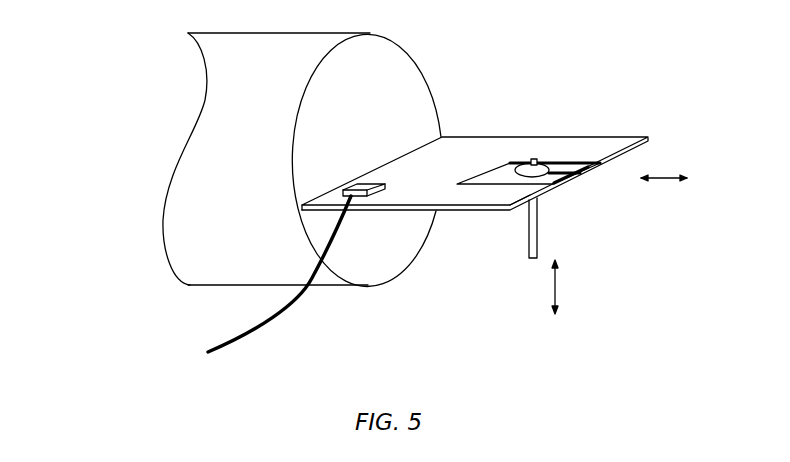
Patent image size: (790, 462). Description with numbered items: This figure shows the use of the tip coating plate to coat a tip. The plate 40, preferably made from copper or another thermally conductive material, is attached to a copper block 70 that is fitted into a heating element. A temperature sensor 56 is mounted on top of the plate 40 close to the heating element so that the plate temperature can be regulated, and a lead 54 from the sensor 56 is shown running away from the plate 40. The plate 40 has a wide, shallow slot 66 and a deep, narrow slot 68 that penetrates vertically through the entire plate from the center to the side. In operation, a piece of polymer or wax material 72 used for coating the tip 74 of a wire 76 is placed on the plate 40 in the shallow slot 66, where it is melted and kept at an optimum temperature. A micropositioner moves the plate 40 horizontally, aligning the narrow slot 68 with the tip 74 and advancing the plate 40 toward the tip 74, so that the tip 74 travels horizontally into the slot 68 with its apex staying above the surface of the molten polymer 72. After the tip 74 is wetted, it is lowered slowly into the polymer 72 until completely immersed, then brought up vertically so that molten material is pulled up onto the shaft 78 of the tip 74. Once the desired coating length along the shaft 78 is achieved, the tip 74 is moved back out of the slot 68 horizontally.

The copper block 70 is at (377, 48).
The plate 40 is at (459, 148).
The shallow slot 66 is at (508, 166).
The tip 74 is at (535, 160).
The polymer material 72 is at (568, 161).
The narrow slot 68 is at (583, 175).
The shaft 78 is at (527, 206).
The wire 76 is at (538, 222).
The temperature sensor 56 is at (385, 187).
The cable 54 is at (297, 297).